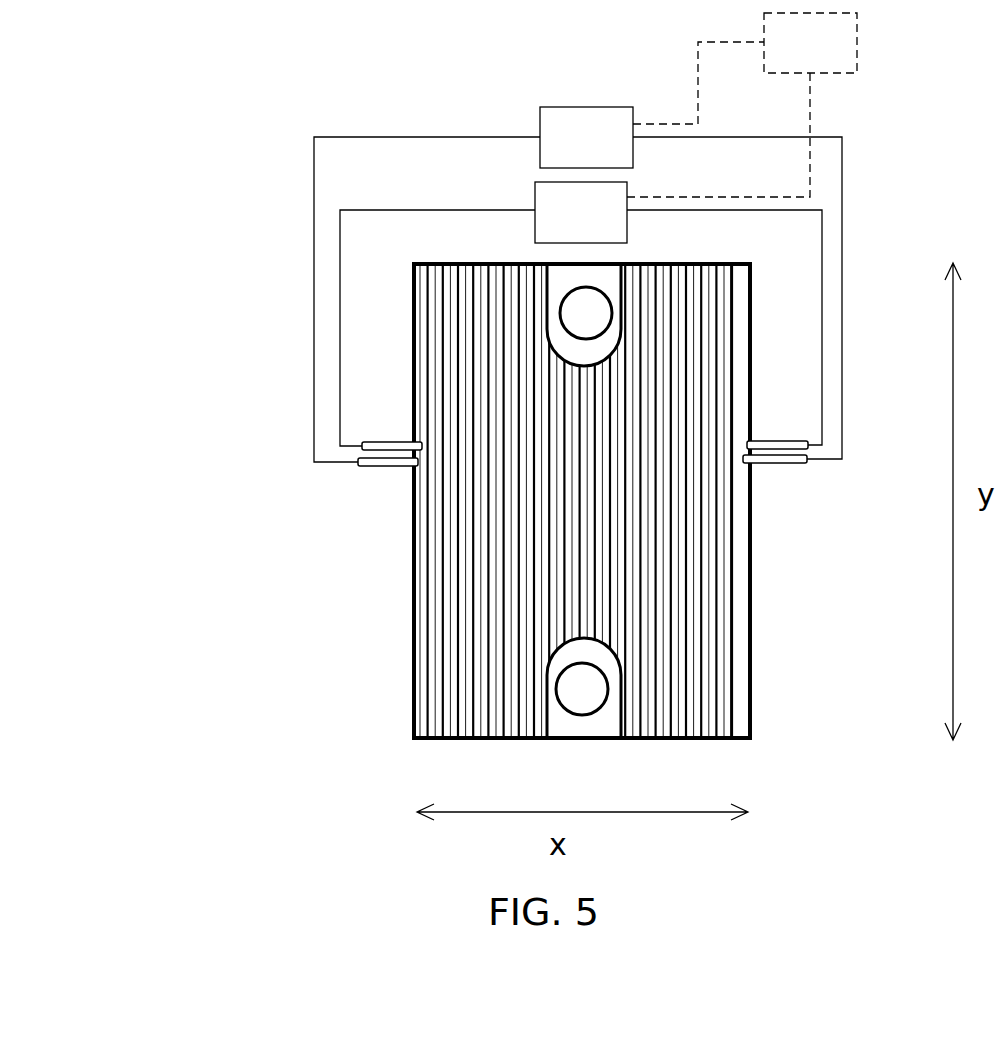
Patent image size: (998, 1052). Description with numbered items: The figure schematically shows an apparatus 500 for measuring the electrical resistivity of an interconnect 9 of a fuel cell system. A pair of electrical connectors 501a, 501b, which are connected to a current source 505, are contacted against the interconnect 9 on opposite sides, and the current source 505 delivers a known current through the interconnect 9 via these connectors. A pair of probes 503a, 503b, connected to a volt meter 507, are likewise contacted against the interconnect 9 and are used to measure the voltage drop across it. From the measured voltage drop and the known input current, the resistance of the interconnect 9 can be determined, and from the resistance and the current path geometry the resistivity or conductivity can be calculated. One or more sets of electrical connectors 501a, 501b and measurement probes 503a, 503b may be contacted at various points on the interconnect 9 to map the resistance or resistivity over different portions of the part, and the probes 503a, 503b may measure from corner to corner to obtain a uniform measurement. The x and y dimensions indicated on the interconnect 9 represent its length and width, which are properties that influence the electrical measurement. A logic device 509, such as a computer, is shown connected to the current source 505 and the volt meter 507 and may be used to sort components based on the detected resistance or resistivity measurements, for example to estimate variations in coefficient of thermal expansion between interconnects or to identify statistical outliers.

The apparatus 500 is at (193, 142).
The current source 505 is at (614, 157).
The volt meter 507 is at (608, 233).
The logic device 509 is at (838, 63).
The probe 503a is at (390, 440).
The probe 503b is at (762, 439).
The electrical connector 501a is at (390, 470).
The electrical connector 501b is at (778, 468).
The interconnect 9 is at (756, 648).